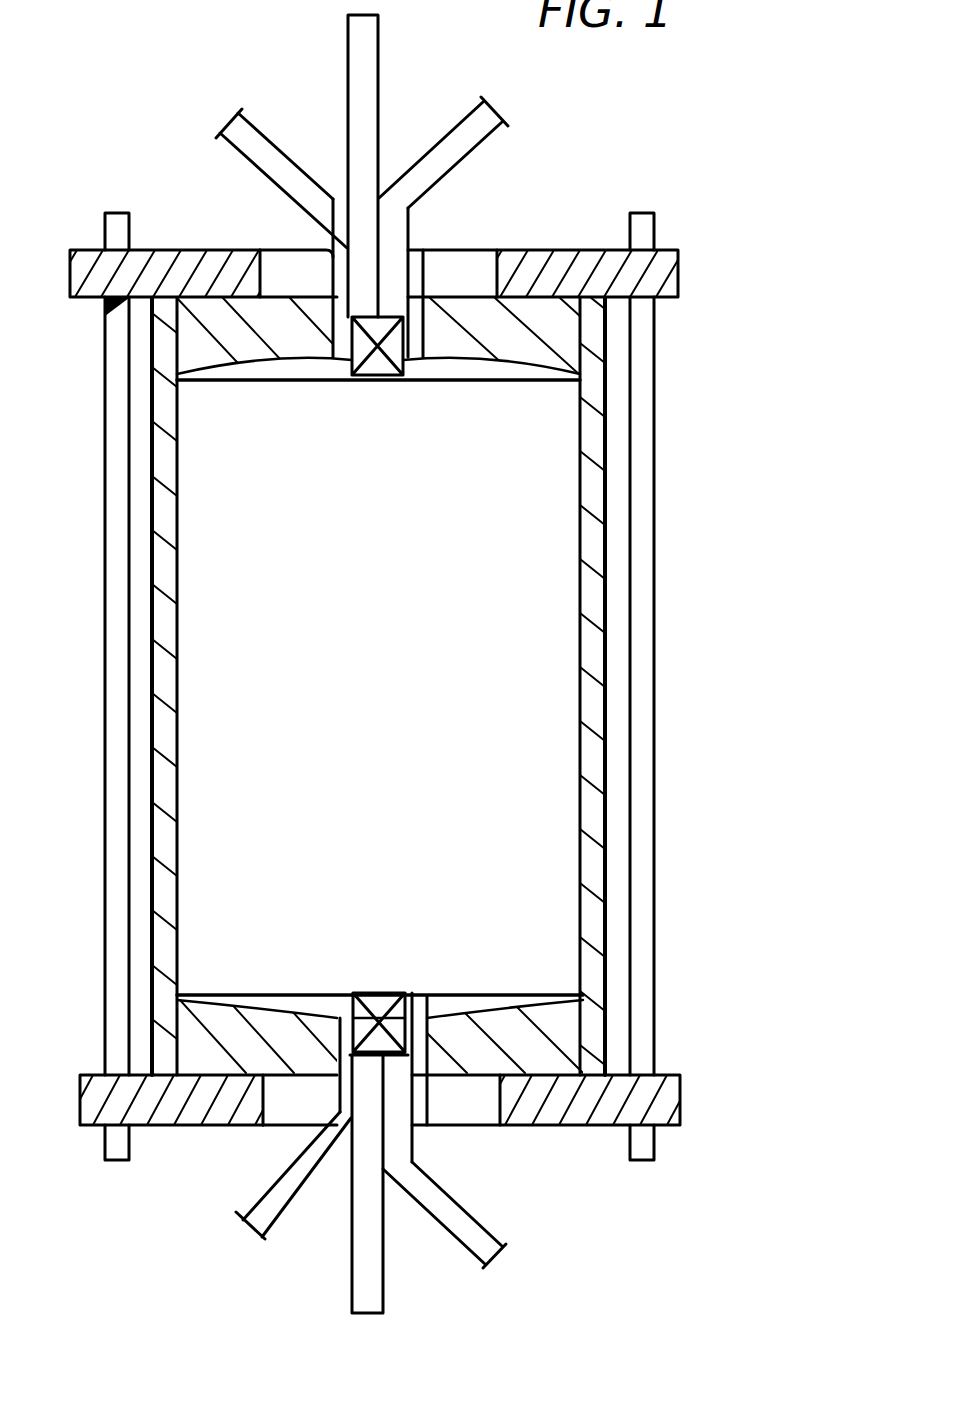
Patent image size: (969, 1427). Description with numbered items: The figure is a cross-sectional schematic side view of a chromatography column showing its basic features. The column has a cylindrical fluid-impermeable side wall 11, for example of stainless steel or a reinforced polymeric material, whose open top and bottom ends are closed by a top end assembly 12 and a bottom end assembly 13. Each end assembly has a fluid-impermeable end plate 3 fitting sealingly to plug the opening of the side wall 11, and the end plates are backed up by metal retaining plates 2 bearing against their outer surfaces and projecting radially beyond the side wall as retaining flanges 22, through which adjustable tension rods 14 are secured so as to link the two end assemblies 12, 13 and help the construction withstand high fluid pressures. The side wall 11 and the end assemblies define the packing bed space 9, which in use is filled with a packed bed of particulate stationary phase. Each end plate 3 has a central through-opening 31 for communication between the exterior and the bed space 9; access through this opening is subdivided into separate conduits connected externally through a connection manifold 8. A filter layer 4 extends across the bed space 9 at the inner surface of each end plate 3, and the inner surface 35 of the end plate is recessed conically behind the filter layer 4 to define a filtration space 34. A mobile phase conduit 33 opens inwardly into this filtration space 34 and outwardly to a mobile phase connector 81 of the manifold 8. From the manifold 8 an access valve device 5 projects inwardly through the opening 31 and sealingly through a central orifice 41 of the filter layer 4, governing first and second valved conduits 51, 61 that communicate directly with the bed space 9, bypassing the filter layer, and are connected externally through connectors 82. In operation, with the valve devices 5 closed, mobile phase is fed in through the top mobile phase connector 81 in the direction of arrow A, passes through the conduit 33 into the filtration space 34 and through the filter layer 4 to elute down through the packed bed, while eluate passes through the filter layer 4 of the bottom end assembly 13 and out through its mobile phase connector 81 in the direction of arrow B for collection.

The retaining plate 2 is at (533, 253).
The end plate 3 is at (580, 332).
The filter layer 4 is at (273, 380).
The access valve device 5 is at (353, 380).
The connection manifold 8 is at (422, 227).
The packing bed space 9 is at (390, 688).
The cylindrical side wall 11 is at (610, 553).
The top end assembly 12 is at (688, 310).
The bottom end assembly 13 is at (680, 1057).
The adjustable tension rod 14 is at (657, 463).
The retaining flange 22 is at (667, 258).
The central through-opening 31 is at (430, 1033).
The mobile phase conduit 33 is at (337, 287).
The filtration space 34 is at (450, 370).
The inner surface of end plate 35 is at (503, 373).
The central orifice of filter layer 41 is at (408, 380).
The first valved conduit 51 is at (393, 1113).
The second valved conduit 61 is at (363, 1087).
The mobile phase connector 81 is at (247, 133).
The connector 82 is at (445, 130).
The mobile phase inlet flow arrow A is at (215, 115).
The eluate outlet flow arrow B is at (507, 1267).